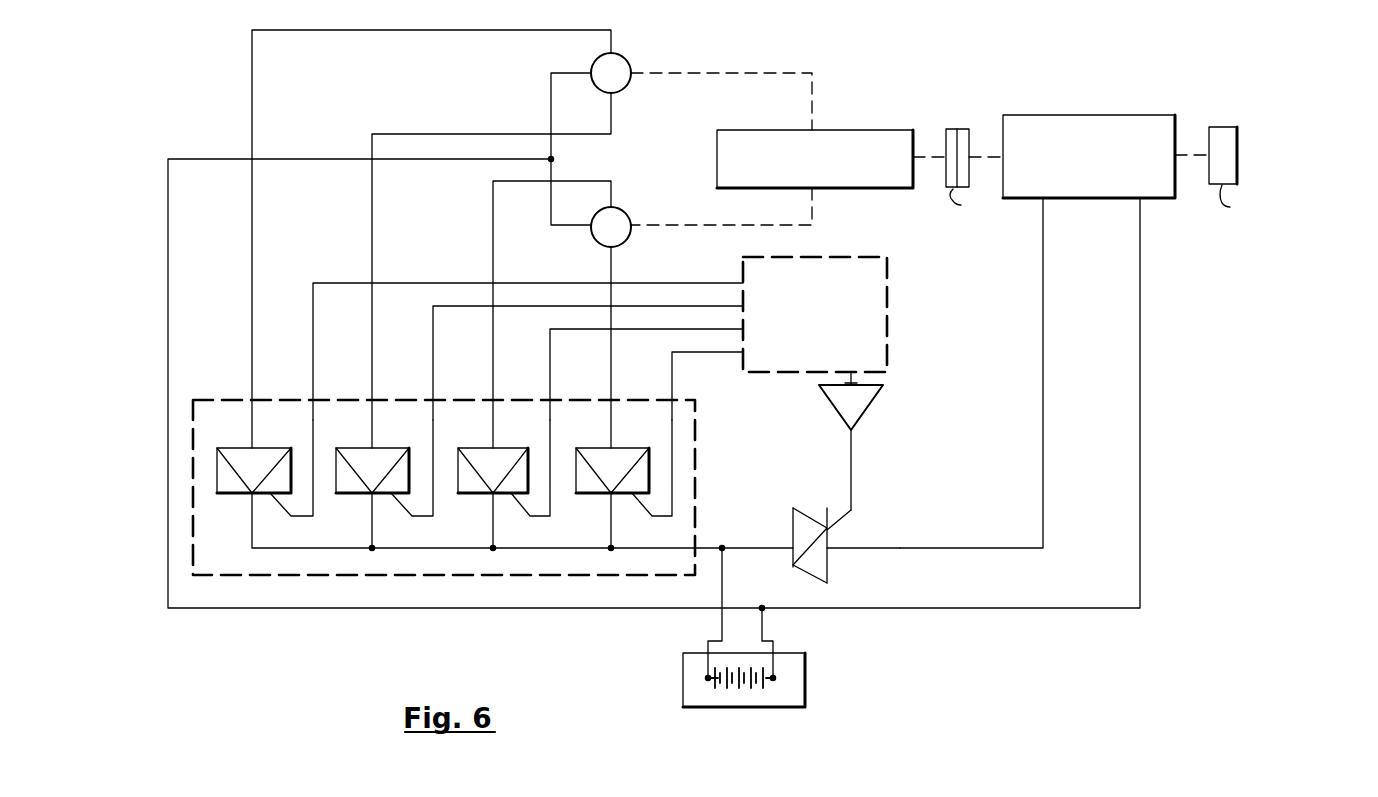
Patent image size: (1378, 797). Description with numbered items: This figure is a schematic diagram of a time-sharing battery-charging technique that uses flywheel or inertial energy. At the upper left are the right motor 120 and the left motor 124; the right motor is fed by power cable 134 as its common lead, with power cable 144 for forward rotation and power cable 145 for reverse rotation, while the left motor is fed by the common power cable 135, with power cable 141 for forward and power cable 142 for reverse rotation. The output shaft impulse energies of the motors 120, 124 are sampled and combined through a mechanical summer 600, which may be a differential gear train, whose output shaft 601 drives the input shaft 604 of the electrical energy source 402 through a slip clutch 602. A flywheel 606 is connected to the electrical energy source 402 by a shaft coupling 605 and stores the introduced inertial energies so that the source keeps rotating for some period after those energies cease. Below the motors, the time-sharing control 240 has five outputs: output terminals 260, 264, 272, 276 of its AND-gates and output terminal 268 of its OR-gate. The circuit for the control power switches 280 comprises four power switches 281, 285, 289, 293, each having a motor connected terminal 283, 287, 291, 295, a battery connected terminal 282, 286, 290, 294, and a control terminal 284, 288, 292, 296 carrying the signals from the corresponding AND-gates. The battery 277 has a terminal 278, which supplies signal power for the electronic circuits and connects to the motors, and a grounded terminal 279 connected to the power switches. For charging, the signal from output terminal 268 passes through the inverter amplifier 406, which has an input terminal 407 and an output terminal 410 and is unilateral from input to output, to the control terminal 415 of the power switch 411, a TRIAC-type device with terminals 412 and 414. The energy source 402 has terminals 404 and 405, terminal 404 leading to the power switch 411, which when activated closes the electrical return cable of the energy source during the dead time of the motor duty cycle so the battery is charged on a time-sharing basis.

The right motor 120 is at (632, 71).
The left motor 124 is at (626, 214).
The power cable 134 is at (589, 68).
The power cable 135 is at (590, 230).
The power cable 141 is at (613, 190).
The power cable 142 is at (613, 262).
The power cable 144 is at (613, 44).
The power cable 145 is at (613, 118).
The time-sharing control 240 is at (855, 257).
The output terminal 260 is at (724, 283).
The output terminal 264 is at (718, 308).
The output terminal 268 is at (853, 378).
The output terminal 272 is at (724, 329).
The output terminal 276 is at (724, 352).
The battery 277 is at (795, 653).
The battery terminal 278 is at (775, 678).
The battery terminal 279 is at (706, 678).
The circuit for the control power switches 280 is at (435, 577).
The power switch 281 is at (254, 470).
The battery connected terminal 282 is at (298, 551).
The motor connected terminal 283 is at (254, 418).
The control terminal 284 is at (298, 518).
The power switch 285 is at (372, 470).
The battery connected terminal 286 is at (380, 537).
The motor connected terminal 287 is at (374, 418).
The control terminal 288 is at (418, 518).
The power switch 289 is at (493, 470).
The battery connected terminal 290 is at (498, 540).
The motor connected terminal 291 is at (495, 418).
The control terminal 292 is at (535, 518).
The power switch 293 is at (612, 470).
The battery connected terminal 294 is at (616, 540).
The motor connected terminal 295 is at (613, 418).
The control terminal 296 is at (655, 518).
The electrical energy source 402 is at (1125, 114).
The terminal 404 is at (1044, 306).
The terminal 405 is at (1141, 305).
The inverter amplifier 406 is at (868, 402).
The input terminal 407 is at (826, 384).
The output terminal 410 is at (852, 456).
The power switch 411 is at (812, 581).
The terminal 412 is at (829, 549).
The terminal 414 is at (774, 549).
The control terminal 415 is at (842, 510).
The mechanical summer 600 is at (868, 134).
The output shaft 601 is at (928, 156).
The slip clutch 602 is at (954, 129).
The input shaft 604 is at (986, 154).
The shaft coupling 605 is at (1194, 154).
The flywheel 606 is at (1238, 130).